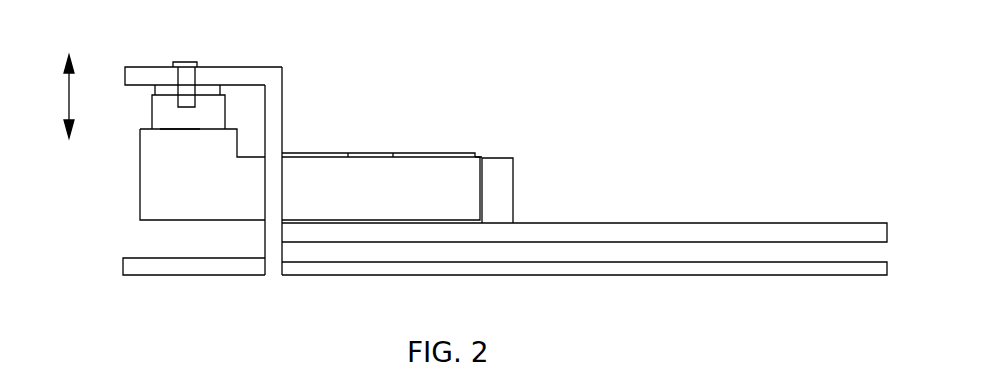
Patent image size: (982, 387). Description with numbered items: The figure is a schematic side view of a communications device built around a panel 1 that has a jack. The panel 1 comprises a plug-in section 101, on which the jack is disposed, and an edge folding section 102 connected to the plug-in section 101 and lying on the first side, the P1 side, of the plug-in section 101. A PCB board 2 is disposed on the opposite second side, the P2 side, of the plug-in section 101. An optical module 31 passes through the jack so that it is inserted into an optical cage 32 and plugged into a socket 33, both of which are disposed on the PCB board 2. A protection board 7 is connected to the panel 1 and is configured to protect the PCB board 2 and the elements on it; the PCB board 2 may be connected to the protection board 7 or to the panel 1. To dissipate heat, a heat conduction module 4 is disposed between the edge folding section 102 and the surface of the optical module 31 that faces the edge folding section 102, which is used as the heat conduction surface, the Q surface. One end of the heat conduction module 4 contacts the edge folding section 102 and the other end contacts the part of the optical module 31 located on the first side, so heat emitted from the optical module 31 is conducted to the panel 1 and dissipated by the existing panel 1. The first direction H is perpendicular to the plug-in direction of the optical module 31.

The panel 1 is at (255, 145).
The plug-in section 101 is at (288, 126).
The edge folding section 102 is at (256, 62).
The PCB board 2 is at (558, 215).
The heat conduction module 4 is at (132, 100).
The protection board 7 is at (677, 262).
The optical module 31 is at (257, 181).
The optical cage 32 is at (438, 138).
The socket 33 is at (504, 158).
The direction H is at (55, 96).
The Q surface Q is at (157, 136).
The P1 side P1 is at (245, 111).
The P2 side P2 is at (309, 99).